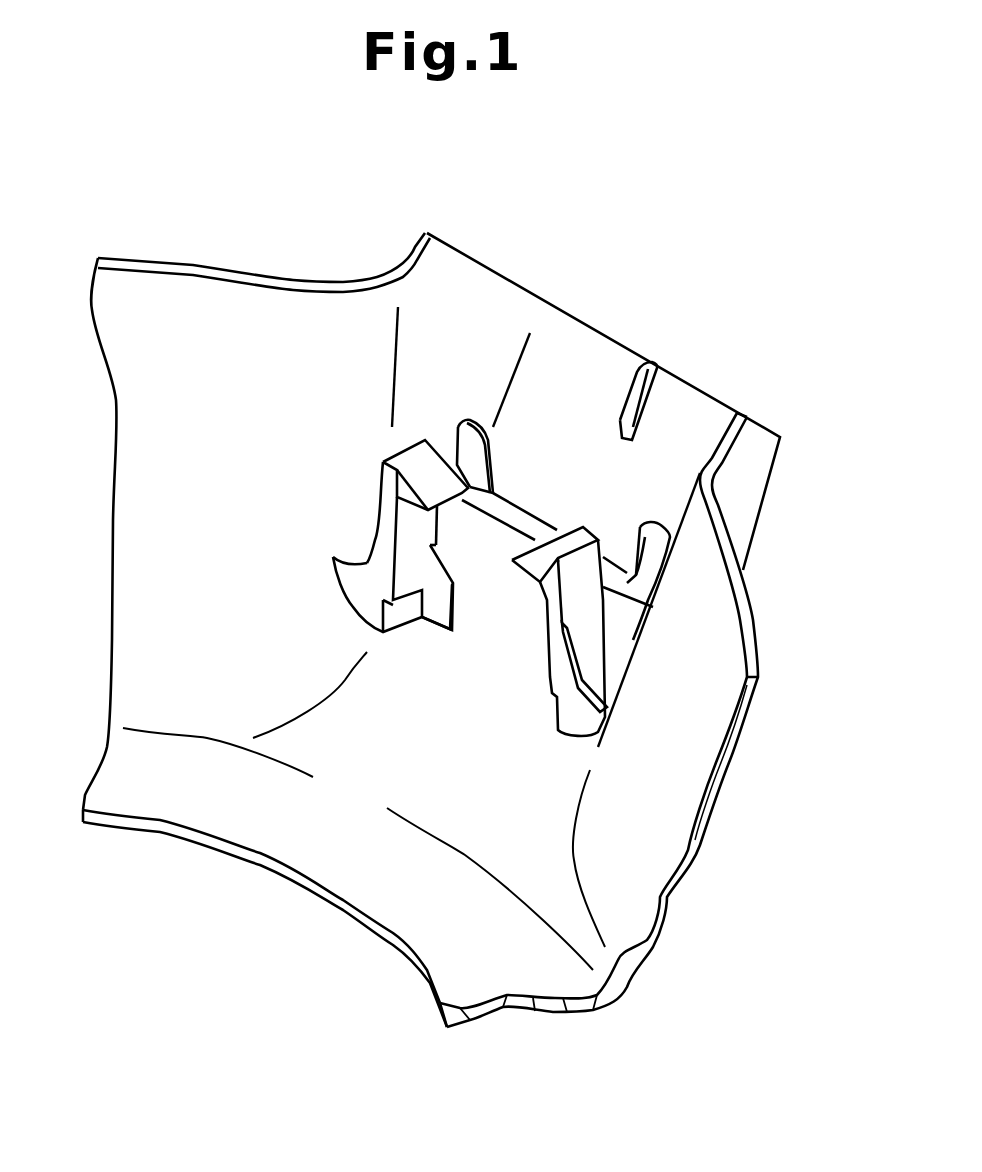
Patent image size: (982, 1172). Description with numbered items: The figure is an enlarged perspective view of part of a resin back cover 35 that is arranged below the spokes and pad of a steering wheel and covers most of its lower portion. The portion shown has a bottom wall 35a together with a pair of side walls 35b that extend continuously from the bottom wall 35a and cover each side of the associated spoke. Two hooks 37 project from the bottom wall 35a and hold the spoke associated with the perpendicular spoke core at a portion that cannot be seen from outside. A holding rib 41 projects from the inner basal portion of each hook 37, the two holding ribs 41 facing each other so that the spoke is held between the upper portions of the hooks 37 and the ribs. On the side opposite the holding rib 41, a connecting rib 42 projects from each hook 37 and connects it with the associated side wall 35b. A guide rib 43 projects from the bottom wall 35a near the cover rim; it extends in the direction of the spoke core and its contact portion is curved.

The back cover 35 is at (644, 300).
The bottom wall 35a is at (500, 292).
The side wall 35b is at (248, 302).
The hook 37 is at (390, 503).
The holding rib 41 is at (452, 610).
The connecting rib 42 is at (347, 573).
The guide rib 43 is at (653, 381).